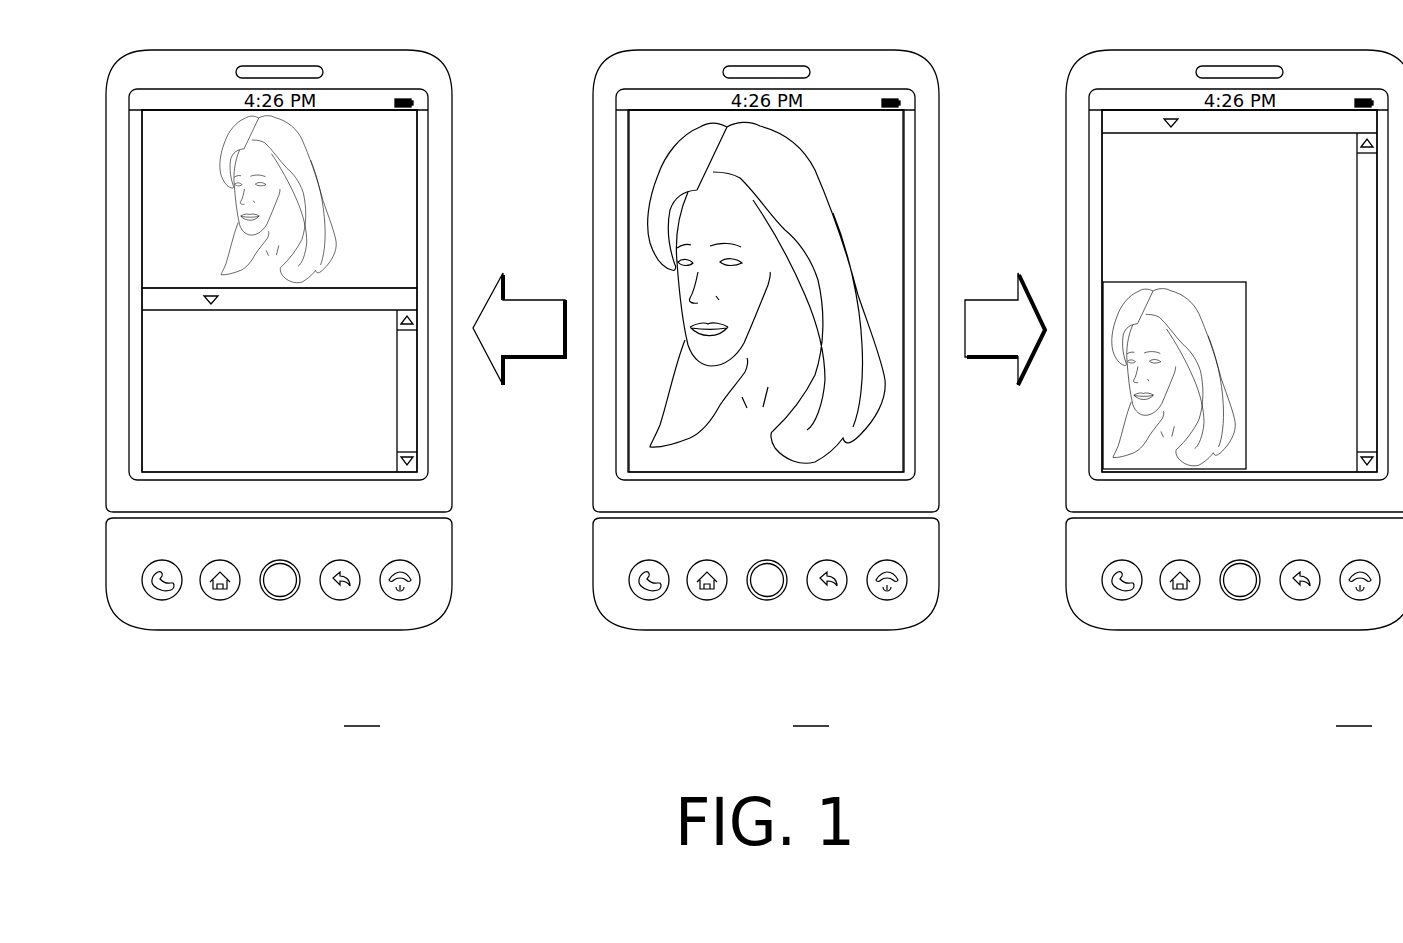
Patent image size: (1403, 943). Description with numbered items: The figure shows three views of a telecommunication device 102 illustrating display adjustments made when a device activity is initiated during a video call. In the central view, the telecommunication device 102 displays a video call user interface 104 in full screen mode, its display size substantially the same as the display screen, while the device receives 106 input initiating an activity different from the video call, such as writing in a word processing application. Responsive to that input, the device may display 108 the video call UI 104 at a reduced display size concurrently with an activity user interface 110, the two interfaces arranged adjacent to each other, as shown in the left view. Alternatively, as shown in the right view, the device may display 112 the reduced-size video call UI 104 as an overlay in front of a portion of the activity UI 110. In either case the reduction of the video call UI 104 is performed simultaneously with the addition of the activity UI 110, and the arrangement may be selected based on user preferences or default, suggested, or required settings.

The telecommunication device 102 is at (233, 50).
The video call user interface 104 is at (417, 185).
The telecommunication device activity user interface 110 is at (417, 445).
The receiving input 106 is at (763, 686).
The displaying video call UI and activity UI adjacent 108 is at (272, 686).
The displaying video call UI as overlay 112 is at (1245, 686).